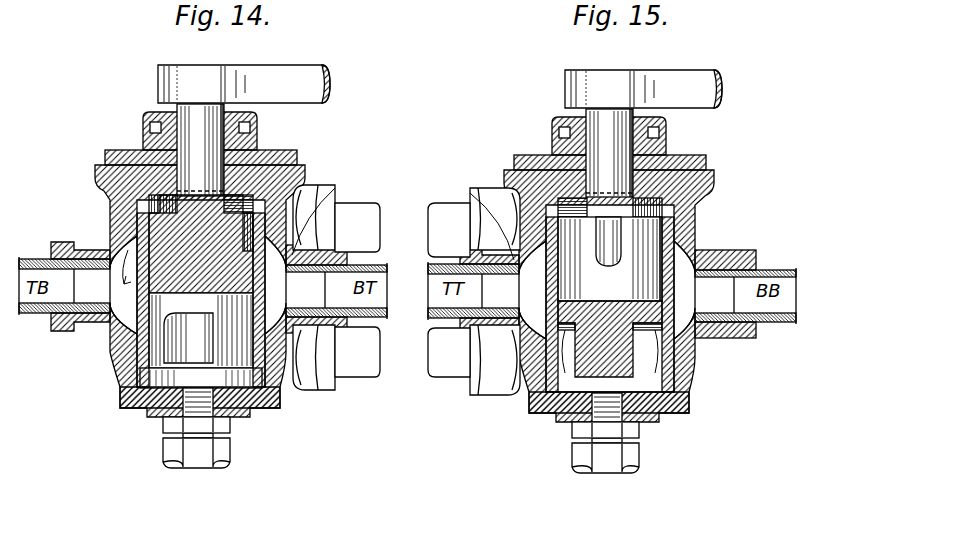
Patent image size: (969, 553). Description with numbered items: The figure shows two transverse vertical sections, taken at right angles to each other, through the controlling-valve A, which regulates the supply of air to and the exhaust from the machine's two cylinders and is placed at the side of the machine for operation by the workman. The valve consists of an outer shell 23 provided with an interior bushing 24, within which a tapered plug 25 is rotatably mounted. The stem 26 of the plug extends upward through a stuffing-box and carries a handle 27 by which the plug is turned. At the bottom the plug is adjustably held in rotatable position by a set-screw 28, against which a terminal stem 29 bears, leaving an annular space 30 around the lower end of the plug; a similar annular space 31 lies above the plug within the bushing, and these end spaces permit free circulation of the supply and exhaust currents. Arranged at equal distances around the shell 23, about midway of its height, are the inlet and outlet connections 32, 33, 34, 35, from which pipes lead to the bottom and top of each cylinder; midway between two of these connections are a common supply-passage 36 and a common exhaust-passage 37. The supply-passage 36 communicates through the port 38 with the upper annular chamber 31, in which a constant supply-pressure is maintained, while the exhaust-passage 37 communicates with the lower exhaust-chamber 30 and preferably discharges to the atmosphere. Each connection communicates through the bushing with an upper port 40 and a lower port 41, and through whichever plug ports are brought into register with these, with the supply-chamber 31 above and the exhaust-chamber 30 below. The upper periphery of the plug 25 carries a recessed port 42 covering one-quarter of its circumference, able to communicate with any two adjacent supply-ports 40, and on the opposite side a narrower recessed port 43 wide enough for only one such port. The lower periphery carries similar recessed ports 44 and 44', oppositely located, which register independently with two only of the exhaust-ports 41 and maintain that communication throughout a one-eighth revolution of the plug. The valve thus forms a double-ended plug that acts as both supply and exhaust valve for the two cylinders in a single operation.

In FIG. 14, the outer shell 23 is at (110, 190).
In FIG. 15, the outer shell 23 is at (621, 291).
In FIG. 14, the interior bushing 24 is at (140, 355).
In FIG. 15, the interior bushing 24 is at (640, 306).
In FIG. 14, the tapered plug 25 is at (201, 291).
In FIG. 15, the tapered plug 25 is at (610, 297).
In FIG. 14, the stem 26 is at (200, 150).
In FIG. 15, the stem 26 is at (609, 153).
In FIG. 14, the handle 27 is at (244, 84).
In FIG. 15, the handle 27 is at (643, 89).
In FIG. 14, the set-screw 28 is at (195, 440).
In FIG. 15, the set-screw 28 is at (605, 462).
In FIG. 14, the terminal stem 29 is at (215, 382).
In FIG. 15, the terminal stem 29 is at (643, 423).
In FIG. 14, the annular space 30 is at (165, 400).
In FIG. 15, the annular space 30 is at (609, 423).
In FIG. 14, the annular space 31 is at (145, 160).
In FIG. 15, the annular space 31 is at (610, 157).
In FIG. 14, the inlet and outlet connection 32 is at (284, 282).
In FIG. 15, the inlet and outlet connection 33 is at (745, 294).
In FIG. 14, the inlet and outlet connection 34 is at (114, 283).
In FIG. 15, the inlet and outlet connection 35 is at (477, 291).
In FIG. 14, the common supply-passage 36 is at (336, 218).
In FIG. 15, the common supply-passage 36 is at (474, 222).
In FIG. 14, the common exhaust-passage 37 is at (336, 357).
In FIG. 15, the common exhaust-passage 37 is at (474, 360).
In FIG. 14, the port 38 is at (238, 205).
In FIG. 15, the port 38 is at (549, 169).
In FIG. 14, the upper port 40 is at (128, 246).
In FIG. 15, the upper port 40 is at (606, 219).
In FIG. 14, the lower port 41 is at (138, 330).
In FIG. 15, the lower port 41 is at (607, 366).
In FIG. 14, the recessed port 42 is at (254, 224).
In FIG. 14, the recessed port 43 is at (140, 211).
In FIG. 15, the recessed port 43 is at (608, 241).
In FIG. 14, the recessed port 44 is at (188, 338).
In FIG. 15, the recessed port 44 is at (683, 372).
In FIG. 15, the recessed port 44' is at (536, 384).
In FIG. 14, the controlling-valve A is at (316, 189).
In FIG. 15, the controlling-valve A is at (609, 200).